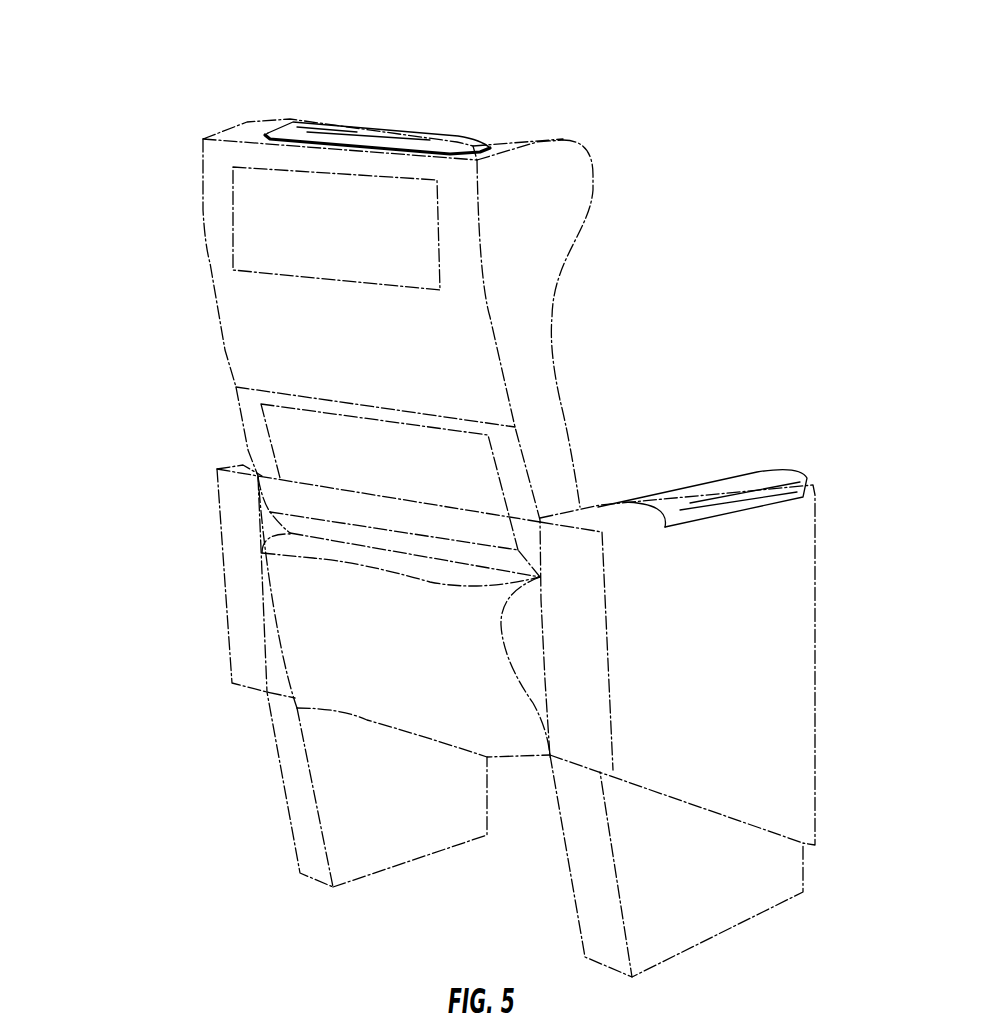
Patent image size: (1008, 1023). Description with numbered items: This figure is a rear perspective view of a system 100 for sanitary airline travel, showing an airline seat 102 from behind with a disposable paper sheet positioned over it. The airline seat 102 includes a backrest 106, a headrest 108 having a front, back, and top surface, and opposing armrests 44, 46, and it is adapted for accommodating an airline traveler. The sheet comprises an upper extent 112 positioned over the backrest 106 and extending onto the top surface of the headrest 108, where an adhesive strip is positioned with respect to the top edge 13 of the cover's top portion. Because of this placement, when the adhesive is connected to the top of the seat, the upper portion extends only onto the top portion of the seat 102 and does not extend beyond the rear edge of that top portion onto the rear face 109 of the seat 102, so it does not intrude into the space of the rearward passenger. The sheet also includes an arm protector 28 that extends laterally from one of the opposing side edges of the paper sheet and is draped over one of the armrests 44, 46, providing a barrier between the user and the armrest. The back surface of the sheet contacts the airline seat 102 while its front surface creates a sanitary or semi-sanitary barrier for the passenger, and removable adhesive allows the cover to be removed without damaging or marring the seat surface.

The system for sanitary airline travel 100 is at (124, 127).
The airline seat 102 is at (184, 505).
The top edge 13 is at (268, 138).
The rear face 109 is at (268, 308).
The upper extent 112 is at (420, 137).
The headrest 108 is at (483, 148).
The backrest 106 is at (537, 415).
The armrest 46 is at (243, 467).
The armrest 44 is at (607, 517).
The arm protector 28 is at (768, 480).